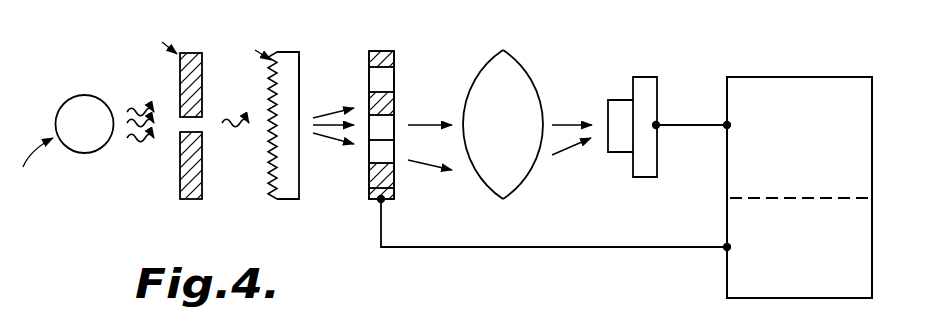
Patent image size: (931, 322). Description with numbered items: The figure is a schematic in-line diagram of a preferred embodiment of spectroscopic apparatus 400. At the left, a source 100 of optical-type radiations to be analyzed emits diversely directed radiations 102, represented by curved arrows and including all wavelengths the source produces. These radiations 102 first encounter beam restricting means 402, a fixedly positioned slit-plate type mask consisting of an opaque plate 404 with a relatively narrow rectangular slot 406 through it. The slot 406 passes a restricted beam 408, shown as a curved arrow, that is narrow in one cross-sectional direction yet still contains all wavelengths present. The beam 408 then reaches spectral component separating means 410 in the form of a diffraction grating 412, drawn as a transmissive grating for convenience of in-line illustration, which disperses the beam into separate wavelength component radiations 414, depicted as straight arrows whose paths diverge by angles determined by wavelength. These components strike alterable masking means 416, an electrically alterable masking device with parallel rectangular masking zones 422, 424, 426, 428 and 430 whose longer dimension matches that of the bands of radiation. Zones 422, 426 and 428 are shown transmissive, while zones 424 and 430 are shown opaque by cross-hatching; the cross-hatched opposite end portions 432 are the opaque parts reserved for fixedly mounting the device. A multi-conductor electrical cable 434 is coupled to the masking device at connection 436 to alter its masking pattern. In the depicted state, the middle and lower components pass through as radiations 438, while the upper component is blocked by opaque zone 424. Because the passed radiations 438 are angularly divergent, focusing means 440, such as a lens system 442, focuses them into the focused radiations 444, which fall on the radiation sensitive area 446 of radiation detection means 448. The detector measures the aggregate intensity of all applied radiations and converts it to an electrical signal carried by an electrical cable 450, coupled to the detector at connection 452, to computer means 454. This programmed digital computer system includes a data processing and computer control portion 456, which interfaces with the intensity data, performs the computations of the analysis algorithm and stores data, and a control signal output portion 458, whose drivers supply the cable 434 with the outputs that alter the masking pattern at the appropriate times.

The source 100 is at (67, 96).
The radiations 102 is at (129, 140).
The spectroscopic apparatus 400 is at (156, 118).
The beam restricting means 402 is at (186, 51).
The opaque plate 404 is at (202, 184).
The slot 406 is at (223, 150).
The restricted beam 408 is at (224, 120).
The spectral component separating means 410 is at (301, 24).
The diffraction grating 412 is at (299, 61).
The wavelength component radiations 414 is at (328, 143).
The alterable masking means 416 is at (405, 132).
The masking zone 422 is at (403, 36).
The masking zone 424 is at (396, 69).
The masking zone 426 is at (396, 118).
The masking zone 428 is at (368, 155).
The masking zone 430 is at (370, 178).
The opposite end portions 432 is at (343, 240).
The electrical cable 434 is at (503, 248).
The electrical coupling 436 is at (384, 200).
The passed wavelength component radiations 438 is at (428, 165).
The focusing means 440 is at (511, 52).
The lens system 442 is at (518, 77).
The focused wavelength component radiations 444 is at (570, 152).
The radiation sensitive area 446 is at (607, 110).
The radiation detection means 448 is at (643, 75).
The electrical cable 450 is at (690, 123).
The electrical coupling 452 is at (661, 128).
The computer means 454 is at (819, 74).
The data processing and computer control portion 456 is at (735, 176).
The control signal output portion 458 is at (738, 222).